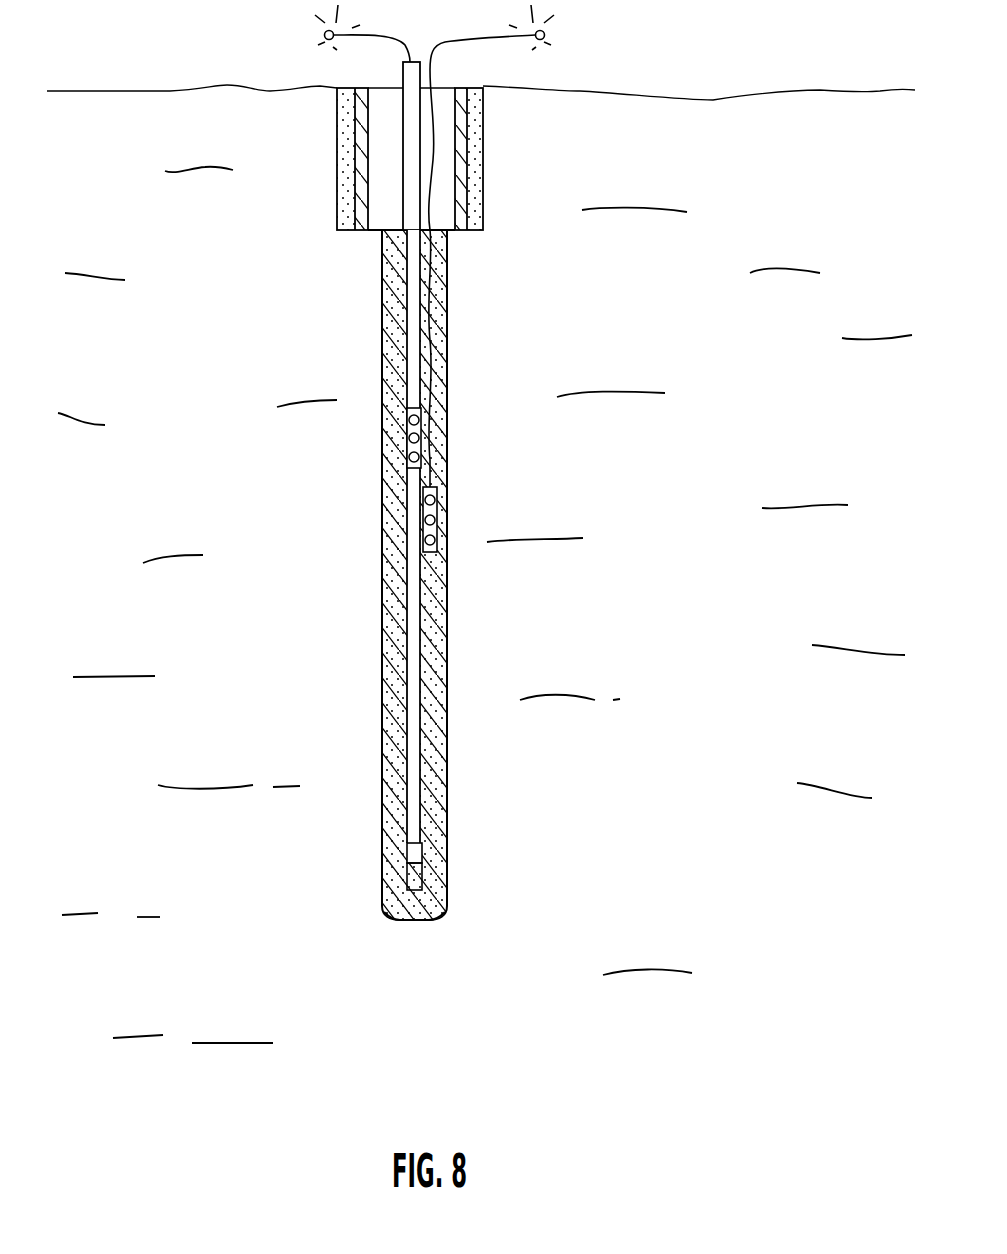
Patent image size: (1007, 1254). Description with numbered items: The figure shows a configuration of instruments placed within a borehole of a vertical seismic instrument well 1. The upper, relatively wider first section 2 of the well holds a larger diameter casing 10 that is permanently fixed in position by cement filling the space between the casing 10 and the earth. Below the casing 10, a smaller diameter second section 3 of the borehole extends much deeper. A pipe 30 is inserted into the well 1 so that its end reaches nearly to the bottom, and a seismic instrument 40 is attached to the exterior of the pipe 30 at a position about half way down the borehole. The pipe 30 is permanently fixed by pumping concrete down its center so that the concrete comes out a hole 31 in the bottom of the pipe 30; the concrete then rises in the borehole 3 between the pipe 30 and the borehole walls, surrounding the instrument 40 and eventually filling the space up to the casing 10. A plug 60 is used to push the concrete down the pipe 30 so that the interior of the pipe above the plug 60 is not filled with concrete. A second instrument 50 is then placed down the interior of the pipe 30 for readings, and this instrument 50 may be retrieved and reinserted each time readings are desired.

The vertical seismic instrument well 1 is at (386, 599).
The first section 2 is at (495, 173).
The second section 3 is at (392, 659).
The casing 10 is at (458, 230).
The pipe 30 is at (432, 736).
The hole 31 is at (421, 920).
The seismic instrument 40 is at (438, 516).
The second instrument 50 is at (407, 449).
The plug 60 is at (425, 857).